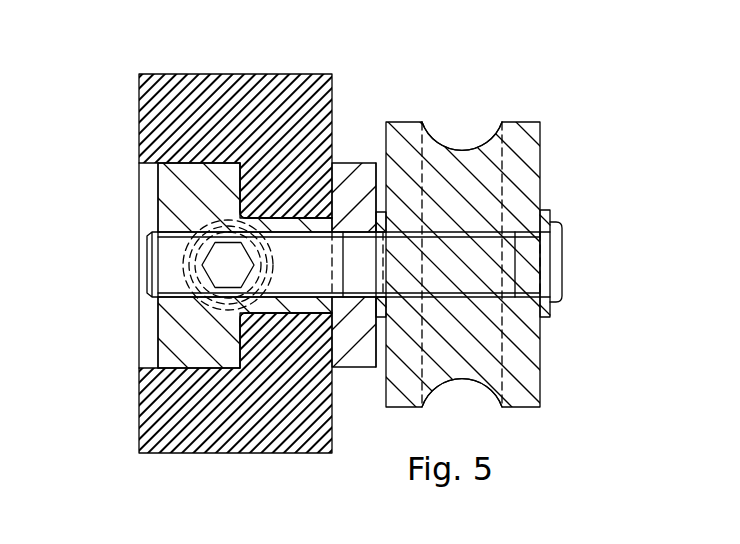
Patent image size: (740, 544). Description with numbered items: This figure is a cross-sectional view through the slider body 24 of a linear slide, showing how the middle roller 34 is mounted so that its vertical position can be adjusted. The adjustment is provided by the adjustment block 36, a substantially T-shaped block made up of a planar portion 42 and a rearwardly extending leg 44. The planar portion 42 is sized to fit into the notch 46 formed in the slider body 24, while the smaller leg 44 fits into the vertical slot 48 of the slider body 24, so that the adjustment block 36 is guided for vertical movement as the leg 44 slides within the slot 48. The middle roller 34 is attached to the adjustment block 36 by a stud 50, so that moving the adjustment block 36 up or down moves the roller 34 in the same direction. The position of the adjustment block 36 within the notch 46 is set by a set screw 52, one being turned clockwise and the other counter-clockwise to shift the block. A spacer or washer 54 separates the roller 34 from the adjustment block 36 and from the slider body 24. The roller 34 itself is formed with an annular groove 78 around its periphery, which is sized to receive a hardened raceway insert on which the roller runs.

The slider body 24 is at (212, 74).
The middle roller 34 is at (525, 122).
The adjustment block 36 is at (158, 207).
The planar portion 42 is at (182, 337).
The leg 44 is at (275, 343).
The notch 46 is at (140, 166).
The vertical slot 48 is at (283, 212).
The stud 50 is at (563, 278).
The set screw 52 is at (222, 266).
The washer 54 is at (358, 162).
The annular groove 78 is at (467, 147).